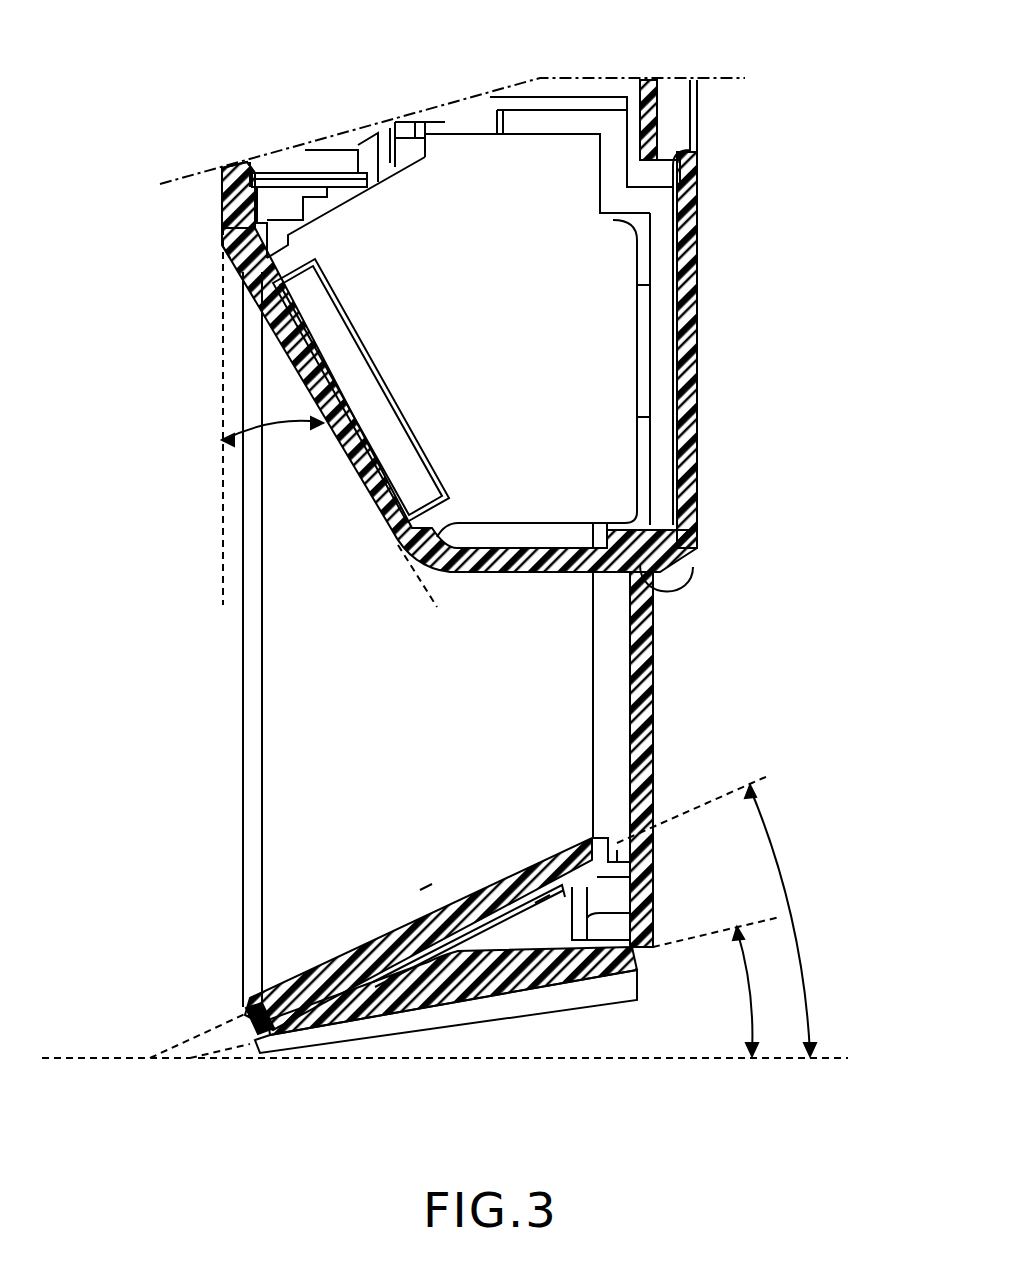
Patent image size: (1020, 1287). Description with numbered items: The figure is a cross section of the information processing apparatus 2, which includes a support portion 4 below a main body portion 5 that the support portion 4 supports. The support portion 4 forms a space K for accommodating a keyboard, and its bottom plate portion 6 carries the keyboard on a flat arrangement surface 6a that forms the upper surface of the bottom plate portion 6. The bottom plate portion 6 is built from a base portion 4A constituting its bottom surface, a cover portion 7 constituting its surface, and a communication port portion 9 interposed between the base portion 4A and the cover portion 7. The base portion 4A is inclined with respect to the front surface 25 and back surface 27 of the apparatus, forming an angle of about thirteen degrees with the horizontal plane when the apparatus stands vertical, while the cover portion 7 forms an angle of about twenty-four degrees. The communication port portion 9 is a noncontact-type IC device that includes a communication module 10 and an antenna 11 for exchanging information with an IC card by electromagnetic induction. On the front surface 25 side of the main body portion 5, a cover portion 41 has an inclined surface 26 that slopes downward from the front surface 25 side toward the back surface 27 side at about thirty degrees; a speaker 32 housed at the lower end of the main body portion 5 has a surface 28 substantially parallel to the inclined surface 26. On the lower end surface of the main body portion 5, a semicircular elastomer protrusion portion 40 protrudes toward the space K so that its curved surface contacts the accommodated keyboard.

The information processing apparatus 2 is at (333, 98).
The support portion 4 is at (845, 580).
The base portion 4A is at (350, 987).
The main body portion 5 is at (845, 80).
The bottom plate portion 6 is at (182, 765).
The arrangement surface 6a is at (538, 898).
The cover portion 7 is at (432, 938).
The communication port portion 9 is at (483, 896).
The communication module 10 is at (540, 900).
The antenna 11 is at (425, 885).
The front surface 25 is at (222, 186).
The inclined surface 26 is at (300, 358).
The back surface 27 is at (697, 262).
The surface 28 is at (397, 437).
The speaker 32 is at (547, 358).
The protrusion portion 40 is at (690, 580).
The cover portion 41 is at (218, 248).
The space K is at (390, 667).